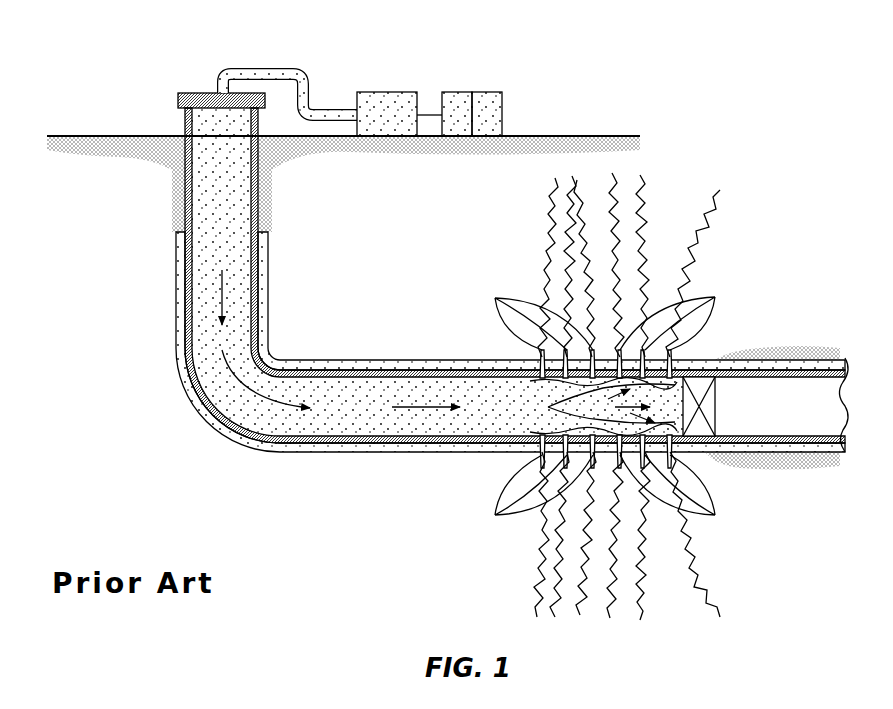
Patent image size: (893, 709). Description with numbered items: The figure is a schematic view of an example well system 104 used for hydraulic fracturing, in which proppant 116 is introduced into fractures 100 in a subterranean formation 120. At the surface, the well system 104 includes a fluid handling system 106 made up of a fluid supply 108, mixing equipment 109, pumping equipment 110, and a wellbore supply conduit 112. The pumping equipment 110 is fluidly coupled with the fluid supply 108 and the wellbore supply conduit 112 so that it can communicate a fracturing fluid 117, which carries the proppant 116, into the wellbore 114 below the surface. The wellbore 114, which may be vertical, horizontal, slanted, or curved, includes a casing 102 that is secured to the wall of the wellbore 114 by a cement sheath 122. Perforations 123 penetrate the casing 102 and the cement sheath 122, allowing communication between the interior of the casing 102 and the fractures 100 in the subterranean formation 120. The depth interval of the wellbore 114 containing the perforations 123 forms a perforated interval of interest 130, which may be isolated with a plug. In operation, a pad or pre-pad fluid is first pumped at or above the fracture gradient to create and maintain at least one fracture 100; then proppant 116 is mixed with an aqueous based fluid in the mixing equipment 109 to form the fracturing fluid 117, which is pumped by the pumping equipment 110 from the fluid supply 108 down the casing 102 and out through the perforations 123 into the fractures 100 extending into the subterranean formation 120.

The fractures 100 is at (541, 218).
The casing 102 is at (442, 368).
The well system 104 is at (107, 97).
The fluid handling system 106 is at (467, 76).
The fluid supply 108 is at (485, 91).
The mixing equipment 109 is at (457, 91).
The pumping equipment 110 is at (388, 91).
The wellbore supply conduit 112 is at (290, 66).
The wellbore 114 is at (270, 305).
The proppant 116 is at (380, 390).
The fracturing fluid 117 is at (225, 298).
The subterranean formation 120 is at (326, 191).
The cement sheath 122 is at (502, 358).
The perforations 123 is at (496, 299).
The perforated interval of interest 130 is at (562, 405).